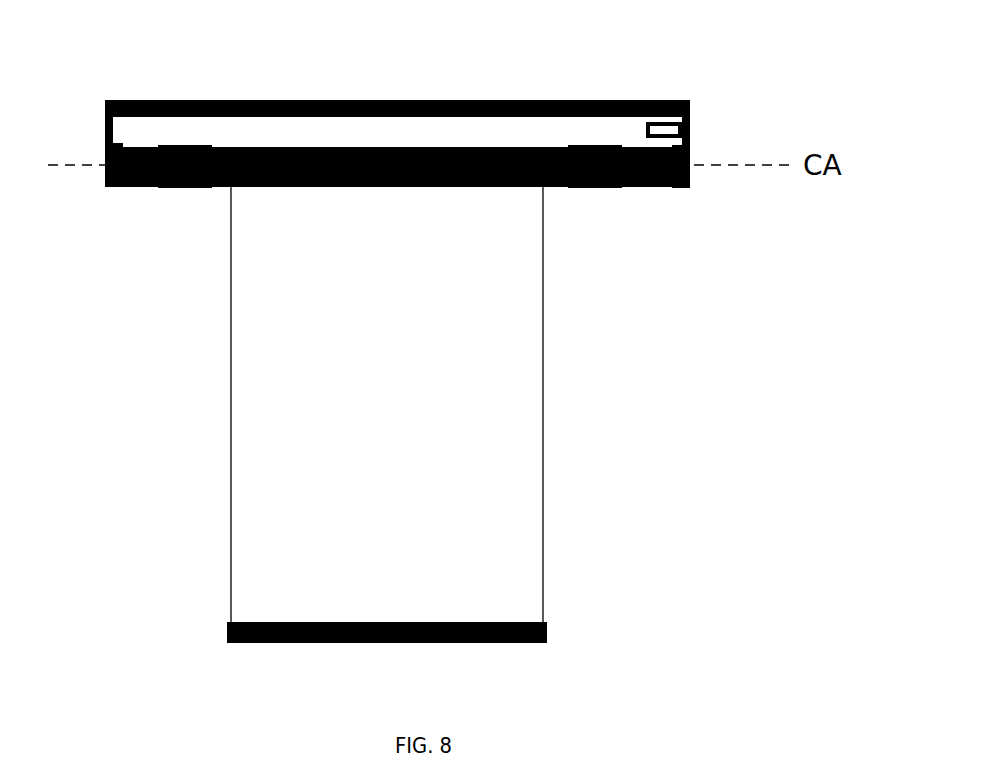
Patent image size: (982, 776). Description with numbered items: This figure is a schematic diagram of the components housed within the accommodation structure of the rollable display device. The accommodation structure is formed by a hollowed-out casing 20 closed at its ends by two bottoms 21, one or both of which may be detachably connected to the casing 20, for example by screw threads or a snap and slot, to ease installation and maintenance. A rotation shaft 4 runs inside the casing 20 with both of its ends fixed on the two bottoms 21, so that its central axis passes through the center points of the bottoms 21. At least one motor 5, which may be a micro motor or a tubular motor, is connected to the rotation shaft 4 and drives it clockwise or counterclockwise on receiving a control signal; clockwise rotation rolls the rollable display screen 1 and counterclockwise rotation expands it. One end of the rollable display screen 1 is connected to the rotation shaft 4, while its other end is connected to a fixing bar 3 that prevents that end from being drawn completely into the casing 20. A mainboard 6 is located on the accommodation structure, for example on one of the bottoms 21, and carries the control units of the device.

The rollable display screen 1 is at (552, 471).
The fixing bar 3 is at (553, 633).
The rotation shaft 4 is at (650, 187).
The motor 5 is at (183, 196).
The mainboard 6 is at (655, 100).
The casing 20 is at (309, 95).
The bottom 21 is at (97, 140).